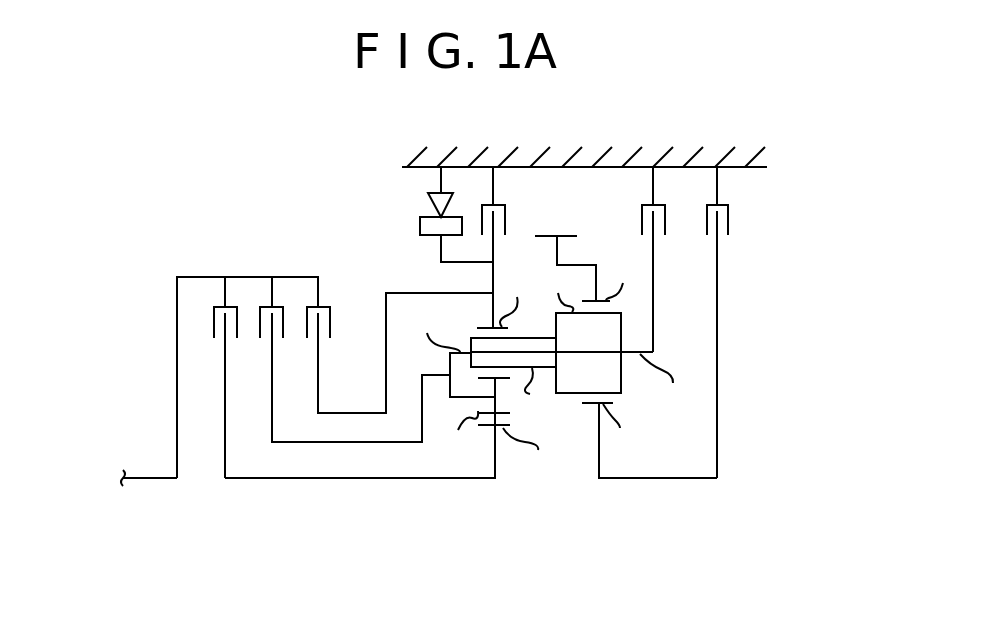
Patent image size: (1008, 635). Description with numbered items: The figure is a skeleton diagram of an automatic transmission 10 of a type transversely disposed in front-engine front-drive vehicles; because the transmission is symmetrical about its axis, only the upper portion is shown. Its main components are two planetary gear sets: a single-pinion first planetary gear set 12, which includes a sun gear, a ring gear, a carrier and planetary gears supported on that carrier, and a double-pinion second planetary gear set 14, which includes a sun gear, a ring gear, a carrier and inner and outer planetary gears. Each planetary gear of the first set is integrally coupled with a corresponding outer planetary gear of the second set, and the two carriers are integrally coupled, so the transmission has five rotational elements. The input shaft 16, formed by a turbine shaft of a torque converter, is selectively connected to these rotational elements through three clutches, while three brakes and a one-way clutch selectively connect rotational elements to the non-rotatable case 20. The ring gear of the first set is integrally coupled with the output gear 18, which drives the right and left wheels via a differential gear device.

The automatic transmission 10 is at (258, 205).
The first planetary gear set 12 is at (600, 496).
The second planetary gear set 14 is at (488, 496).
The input shaft 16 is at (143, 480).
The output gear 18 is at (567, 233).
The case 20 is at (433, 158).